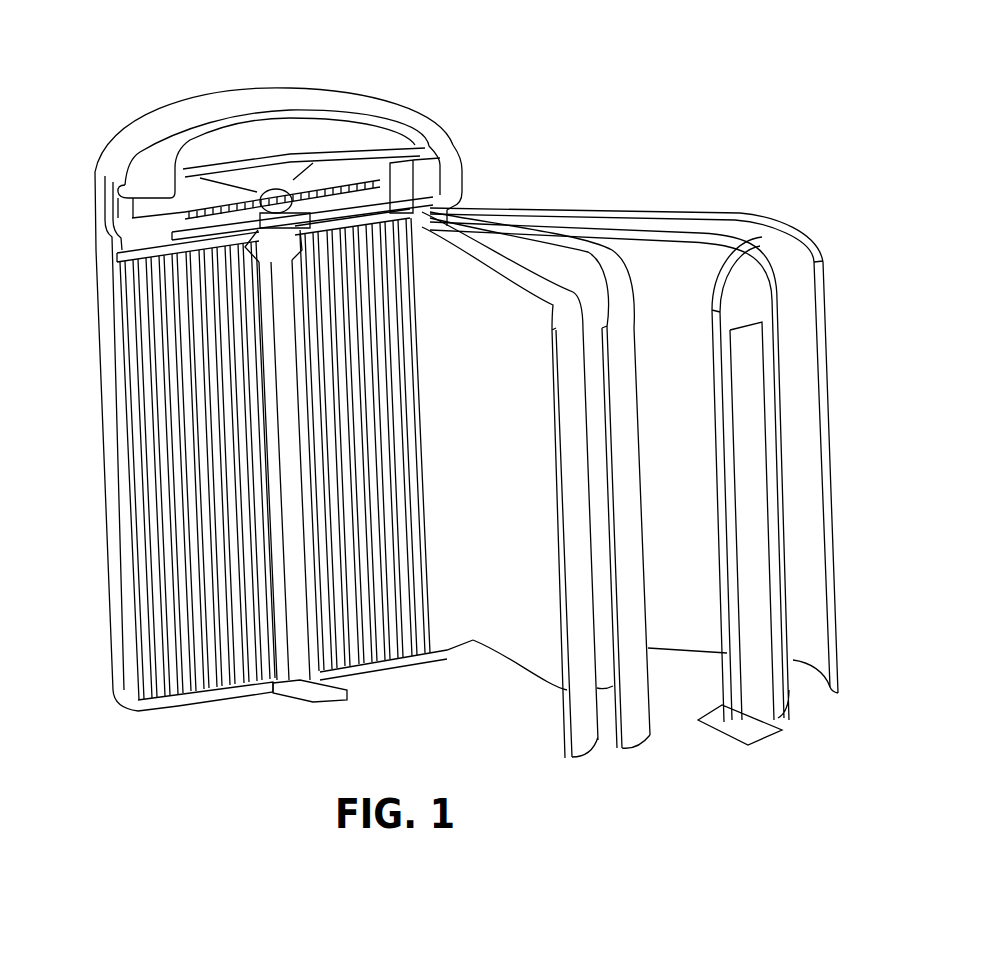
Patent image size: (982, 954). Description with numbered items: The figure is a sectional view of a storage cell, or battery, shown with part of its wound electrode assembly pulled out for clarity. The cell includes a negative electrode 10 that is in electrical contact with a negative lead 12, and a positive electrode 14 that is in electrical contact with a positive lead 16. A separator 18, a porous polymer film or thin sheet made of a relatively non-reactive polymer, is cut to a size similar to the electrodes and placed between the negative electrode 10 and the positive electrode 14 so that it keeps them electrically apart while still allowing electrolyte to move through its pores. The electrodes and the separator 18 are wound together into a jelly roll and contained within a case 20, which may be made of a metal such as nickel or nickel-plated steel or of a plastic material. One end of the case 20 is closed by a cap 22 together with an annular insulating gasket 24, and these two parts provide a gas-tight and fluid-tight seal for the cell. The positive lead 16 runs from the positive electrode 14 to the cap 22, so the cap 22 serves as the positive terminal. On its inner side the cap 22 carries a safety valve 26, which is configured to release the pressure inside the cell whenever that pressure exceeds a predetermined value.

The negative electrode 10 is at (784, 686).
The negative lead 12 is at (768, 724).
The positive electrode 14 is at (578, 720).
The positive lead 16 is at (288, 197).
The separator 18 is at (627, 340).
The case 20 is at (130, 724).
The cap 22 is at (258, 128).
The annular insulating gasket 24 is at (122, 188).
The safety valve 26 is at (350, 166).